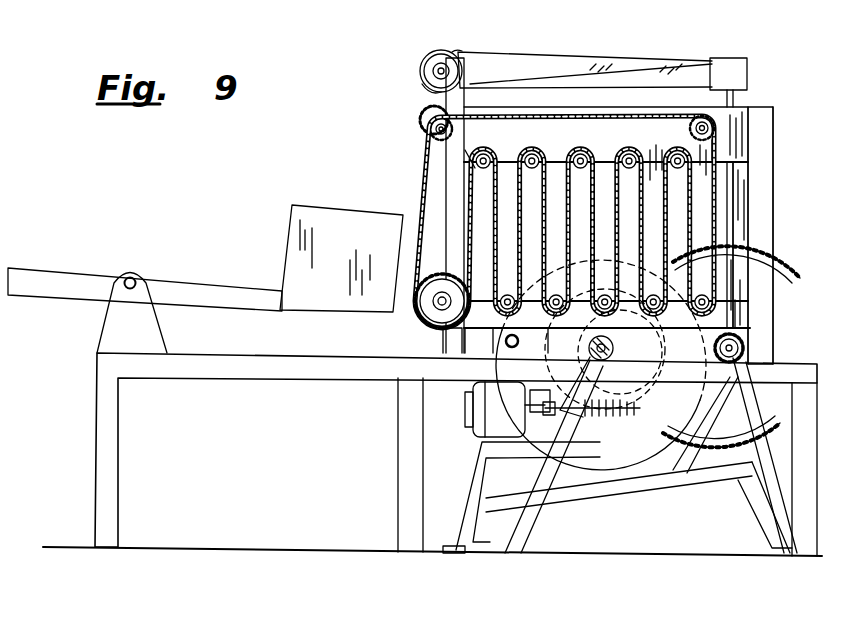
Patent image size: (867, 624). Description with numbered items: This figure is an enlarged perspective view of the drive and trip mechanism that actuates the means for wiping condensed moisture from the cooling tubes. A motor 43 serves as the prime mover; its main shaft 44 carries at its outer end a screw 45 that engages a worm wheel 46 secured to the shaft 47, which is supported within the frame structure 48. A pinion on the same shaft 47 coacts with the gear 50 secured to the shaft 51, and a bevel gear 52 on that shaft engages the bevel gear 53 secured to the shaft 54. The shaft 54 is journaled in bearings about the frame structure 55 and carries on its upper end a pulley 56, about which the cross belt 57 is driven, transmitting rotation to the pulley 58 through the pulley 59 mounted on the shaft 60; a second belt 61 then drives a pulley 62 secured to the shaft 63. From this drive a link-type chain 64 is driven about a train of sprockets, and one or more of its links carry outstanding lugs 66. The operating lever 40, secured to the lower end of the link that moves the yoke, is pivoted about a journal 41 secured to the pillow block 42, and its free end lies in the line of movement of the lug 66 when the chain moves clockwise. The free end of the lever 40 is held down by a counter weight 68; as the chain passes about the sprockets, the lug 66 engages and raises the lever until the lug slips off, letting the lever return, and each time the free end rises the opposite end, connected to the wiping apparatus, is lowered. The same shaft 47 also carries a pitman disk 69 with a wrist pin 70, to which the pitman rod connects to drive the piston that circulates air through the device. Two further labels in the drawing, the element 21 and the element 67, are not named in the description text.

The conveyor chain 21 is at (473, 195).
The feed table 40 is at (78, 285).
The pivot pin 41 is at (135, 275).
The pivot bracket 42 is at (117, 318).
The motor 43 is at (473, 422).
The crank hub 44 is at (571, 374).
The diagonal brace 45 is at (603, 423).
The drive wheel 46 is at (663, 420).
The coupling shaft 47 is at (543, 430).
The sector gear 48 is at (683, 468).
The gear arm 50 is at (720, 447).
The shaft 51 is at (745, 336).
The sprocket 52 is at (743, 347).
The bearing 53 is at (740, 330).
The frame upright 54 is at (733, 203).
The frame post 55 is at (772, 237).
The end cap 56 is at (730, 60).
The support arm 57 is at (657, 77).
The pulley 58 is at (420, 67).
The belt 59 is at (422, 80).
The belt run 60 is at (452, 58).
The gear 61 is at (422, 108).
The sprocket 62 is at (428, 133).
The chain run 63 is at (436, 160).
The guide bar 64 is at (670, 197).
The drive sprocket 66 is at (417, 327).
The sprocket hub 67 is at (425, 317).
The hopper 68 is at (300, 225).
The stand frame 69 is at (613, 460).
The mounting bracket 70 is at (505, 341).